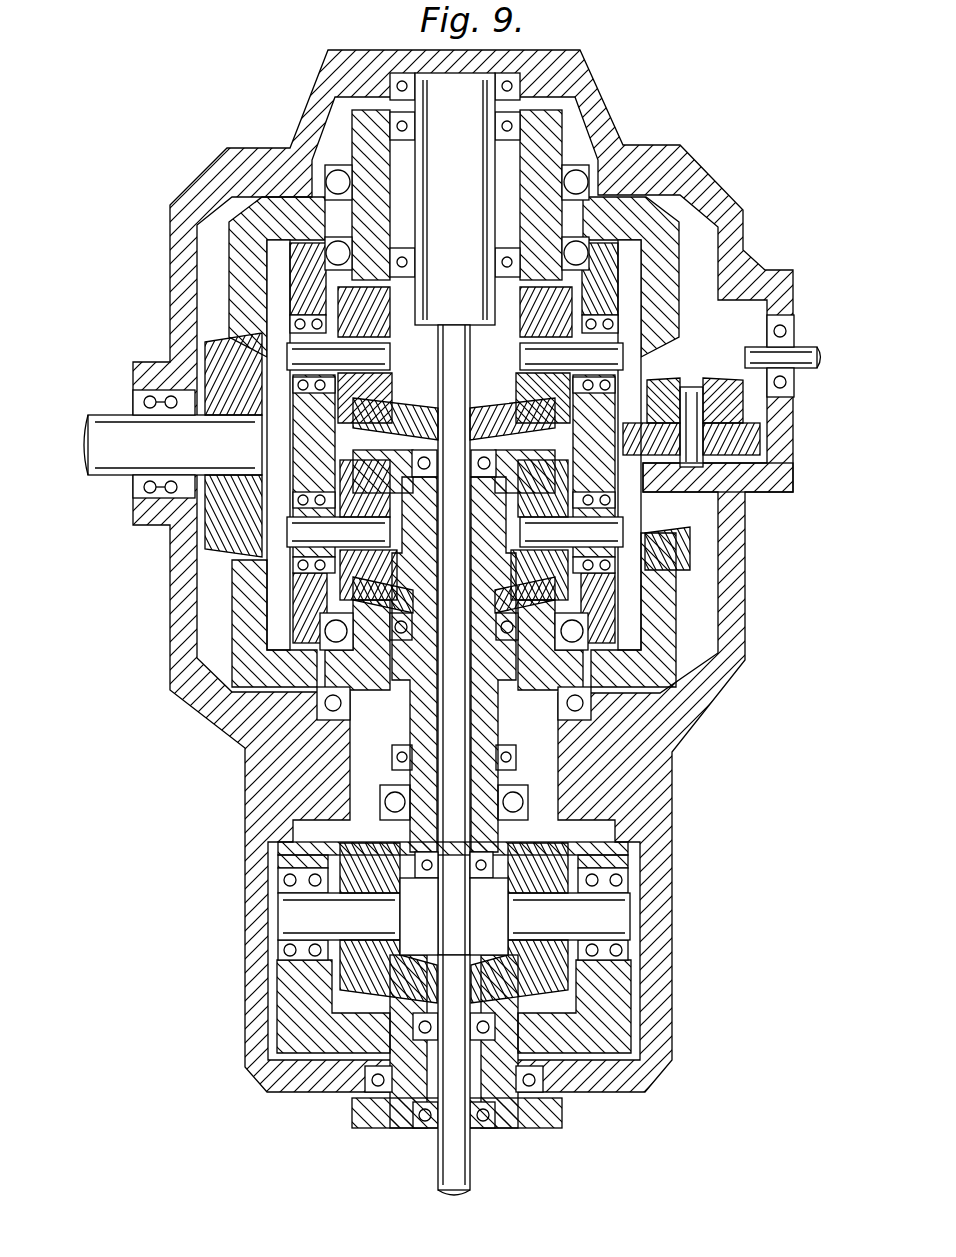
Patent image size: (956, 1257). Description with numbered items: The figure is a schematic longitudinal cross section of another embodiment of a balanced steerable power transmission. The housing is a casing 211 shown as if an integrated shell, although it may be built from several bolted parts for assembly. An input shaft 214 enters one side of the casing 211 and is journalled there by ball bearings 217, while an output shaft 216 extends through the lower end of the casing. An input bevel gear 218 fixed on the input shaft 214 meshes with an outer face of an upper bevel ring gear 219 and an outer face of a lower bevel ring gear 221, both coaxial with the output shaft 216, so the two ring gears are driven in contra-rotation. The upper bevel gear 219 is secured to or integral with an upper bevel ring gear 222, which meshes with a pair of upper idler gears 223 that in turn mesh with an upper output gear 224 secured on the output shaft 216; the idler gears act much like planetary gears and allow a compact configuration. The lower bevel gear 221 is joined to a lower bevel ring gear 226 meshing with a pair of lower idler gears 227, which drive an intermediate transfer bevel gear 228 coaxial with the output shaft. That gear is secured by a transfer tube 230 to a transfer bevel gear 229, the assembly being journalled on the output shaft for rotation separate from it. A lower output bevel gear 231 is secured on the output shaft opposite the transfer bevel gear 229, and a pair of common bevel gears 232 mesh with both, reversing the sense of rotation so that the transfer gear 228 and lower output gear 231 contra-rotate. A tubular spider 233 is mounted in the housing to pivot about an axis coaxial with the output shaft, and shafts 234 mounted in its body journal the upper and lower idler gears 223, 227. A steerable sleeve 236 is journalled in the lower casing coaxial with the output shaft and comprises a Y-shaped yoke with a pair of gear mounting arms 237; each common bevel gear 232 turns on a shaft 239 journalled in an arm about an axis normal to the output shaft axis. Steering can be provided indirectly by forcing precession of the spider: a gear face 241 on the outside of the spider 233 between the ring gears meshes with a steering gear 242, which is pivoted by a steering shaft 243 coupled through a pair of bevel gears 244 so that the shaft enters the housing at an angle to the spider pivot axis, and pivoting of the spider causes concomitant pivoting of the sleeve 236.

The casing 211 is at (203, 716).
The input shaft 214 is at (137, 492).
The output shaft 216 is at (437, 1150).
The ball bearings 217 is at (140, 522).
The input bevel gear 218 is at (236, 352).
The upper bevel ring gear 219 is at (262, 336).
The lower bevel ring gear 221 is at (232, 546).
The upper bevel ring gear 222 is at (393, 300).
The upper idler gears 223 is at (402, 322).
The upper output gear 224 is at (488, 396).
The lower bevel ring gear 226 is at (562, 580).
The lower idler gears 227 is at (338, 487).
The intermediate transfer bevel gear 228 is at (620, 486).
The transfer bevel gear 229 is at (660, 820).
The transfer tube 230 is at (608, 748).
The lower output bevel gear 231 is at (486, 950).
The common bevel gears 232 is at (411, 950).
The tubular spider 233 is at (305, 290).
The shafts 234 is at (386, 345).
The steerable sleeve 236 is at (520, 1130).
The gear mounting arms 237 is at (282, 845).
The shaft 239 is at (290, 908).
The gear face 241 is at (691, 439).
The steering gear 242 is at (752, 444).
The steering shaft 243 is at (800, 350).
The bevel gears 244 is at (716, 300).